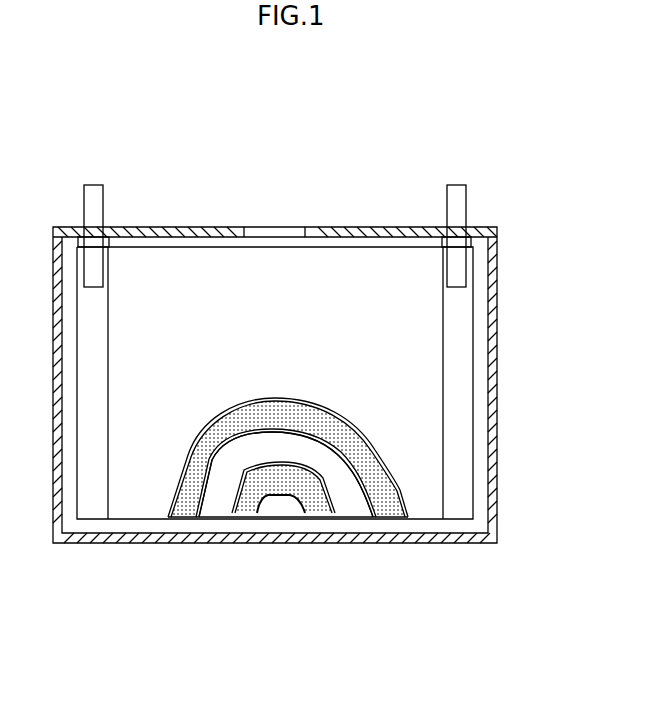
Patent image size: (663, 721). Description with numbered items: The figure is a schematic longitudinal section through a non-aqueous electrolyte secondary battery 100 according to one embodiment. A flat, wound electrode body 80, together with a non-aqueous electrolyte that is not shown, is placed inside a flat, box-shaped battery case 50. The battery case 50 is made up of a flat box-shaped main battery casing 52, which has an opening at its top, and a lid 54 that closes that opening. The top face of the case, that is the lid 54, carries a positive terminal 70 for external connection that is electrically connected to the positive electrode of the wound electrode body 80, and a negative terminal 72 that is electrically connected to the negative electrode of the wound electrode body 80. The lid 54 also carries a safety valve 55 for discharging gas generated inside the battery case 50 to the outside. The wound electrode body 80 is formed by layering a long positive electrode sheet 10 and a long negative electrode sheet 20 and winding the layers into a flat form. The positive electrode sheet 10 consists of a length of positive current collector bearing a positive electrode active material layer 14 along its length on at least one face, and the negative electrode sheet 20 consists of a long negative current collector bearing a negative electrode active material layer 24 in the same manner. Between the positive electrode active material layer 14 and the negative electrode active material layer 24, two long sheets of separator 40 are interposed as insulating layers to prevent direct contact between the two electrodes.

The non-aqueous electrolyte secondary battery 100 is at (495, 127).
The battery case 50 is at (498, 383).
The main battery casing 52 is at (493, 497).
The lid 54 is at (382, 232).
The safety valve 55 is at (268, 232).
The positive terminal 70 is at (92, 190).
The negative terminal 72 is at (454, 190).
The wound electrode body 80 is at (422, 520).
The positive electrode sheet 10 is at (182, 507).
The positive electrode active material layer 14 is at (258, 534).
The negative electrode sheet 20 is at (243, 507).
The negative electrode active material layer 24 is at (272, 565).
The separator 40 is at (135, 502).